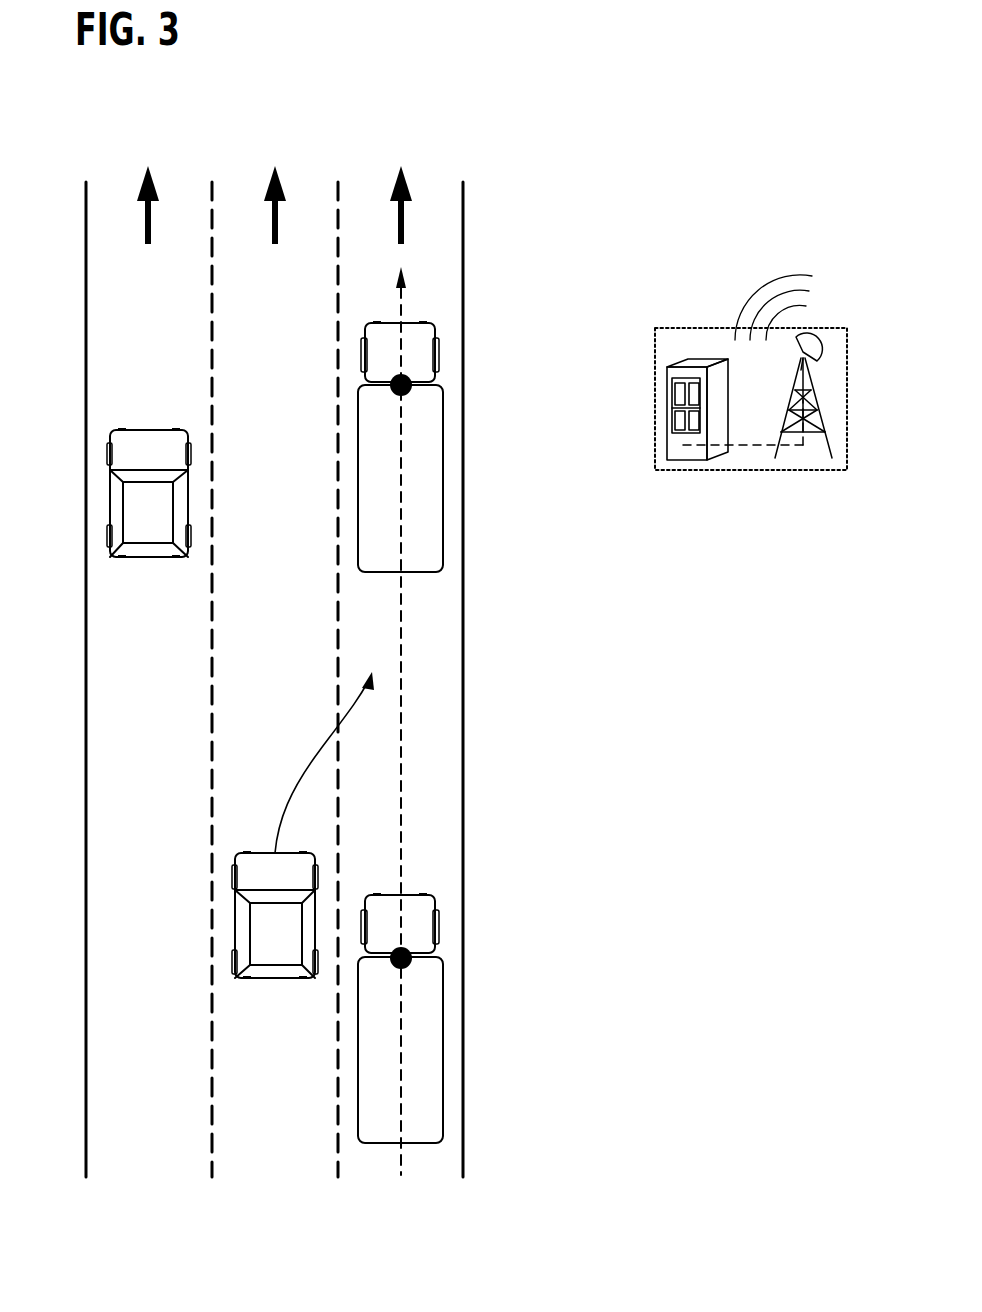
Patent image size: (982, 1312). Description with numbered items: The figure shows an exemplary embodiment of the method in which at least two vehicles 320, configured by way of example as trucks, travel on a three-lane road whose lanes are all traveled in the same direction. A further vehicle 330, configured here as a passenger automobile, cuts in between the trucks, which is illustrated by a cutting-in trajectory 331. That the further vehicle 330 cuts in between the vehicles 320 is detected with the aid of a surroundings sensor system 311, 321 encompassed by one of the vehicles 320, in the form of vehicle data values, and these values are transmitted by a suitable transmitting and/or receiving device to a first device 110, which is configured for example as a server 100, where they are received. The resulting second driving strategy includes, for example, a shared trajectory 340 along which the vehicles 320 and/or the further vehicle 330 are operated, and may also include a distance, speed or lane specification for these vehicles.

The server 100 is at (783, 470).
The first device 110 is at (680, 433).
The surroundings sensor system 311 is at (410, 392).
The vehicle 320 is at (425, 505).
The surroundings sensor system 321 is at (410, 965).
The further vehicle 330 is at (300, 880).
The cutting-in trajectory 331 is at (350, 735).
The shared trajectory 340 is at (403, 305).